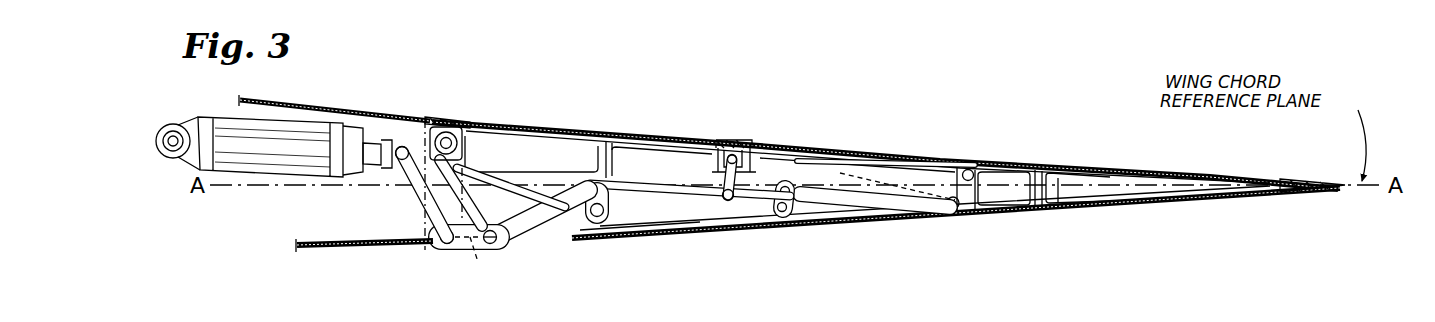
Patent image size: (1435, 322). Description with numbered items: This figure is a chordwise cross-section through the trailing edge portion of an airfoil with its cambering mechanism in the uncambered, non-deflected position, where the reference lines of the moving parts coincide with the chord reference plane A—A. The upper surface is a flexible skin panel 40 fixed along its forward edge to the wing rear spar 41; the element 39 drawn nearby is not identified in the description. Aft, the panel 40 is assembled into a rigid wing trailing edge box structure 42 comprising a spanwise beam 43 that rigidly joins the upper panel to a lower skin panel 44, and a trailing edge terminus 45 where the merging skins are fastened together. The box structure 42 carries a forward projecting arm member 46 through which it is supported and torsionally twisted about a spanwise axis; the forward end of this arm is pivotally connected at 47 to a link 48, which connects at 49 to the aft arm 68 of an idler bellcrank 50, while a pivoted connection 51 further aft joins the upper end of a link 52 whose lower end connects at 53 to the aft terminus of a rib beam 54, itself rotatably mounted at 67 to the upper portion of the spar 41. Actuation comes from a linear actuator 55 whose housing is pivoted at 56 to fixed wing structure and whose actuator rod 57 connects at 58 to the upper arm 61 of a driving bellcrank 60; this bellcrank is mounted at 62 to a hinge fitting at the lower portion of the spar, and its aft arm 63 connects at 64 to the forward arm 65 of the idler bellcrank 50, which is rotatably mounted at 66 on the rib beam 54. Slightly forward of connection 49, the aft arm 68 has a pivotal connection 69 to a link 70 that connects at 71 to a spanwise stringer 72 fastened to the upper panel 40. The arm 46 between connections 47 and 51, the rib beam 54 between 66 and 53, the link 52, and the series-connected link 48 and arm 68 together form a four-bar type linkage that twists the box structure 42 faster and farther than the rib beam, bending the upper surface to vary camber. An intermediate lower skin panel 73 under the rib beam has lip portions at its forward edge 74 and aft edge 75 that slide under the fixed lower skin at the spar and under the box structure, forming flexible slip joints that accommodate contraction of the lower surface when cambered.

The upper flap skin panel 39 is at (319, 102).
The flexible skin panel 40 is at (617, 121).
The wing rear spar 41 is at (419, 135).
The wing trailing edge box structure 42 is at (1124, 196).
The spanwise beam 43 is at (1097, 185).
The lower skin panel 44 is at (1097, 209).
The trailing edge terminus 45 is at (1341, 181).
The forward projecting arm member 46 is at (853, 188).
The pivoted connection 47 is at (800, 160).
The link 48 is at (778, 190).
The pivotal connection 49 is at (782, 213).
The idler bellcrank 50 is at (557, 182).
The pivoted connection 51 is at (971, 171).
The link 52 is at (960, 196).
The lower end connection 53 is at (966, 208).
The rib beam 54 is at (527, 119).
The linear actuator 55 is at (337, 118).
The pivotal attachment 56 is at (176, 124).
The actuator rod 57 is at (378, 176).
The pivotal connection 58 is at (386, 168).
The driving bellcrank 60 is at (420, 215).
The upper arm 61 is at (423, 185).
The rotatable mounting 62 is at (441, 243).
The aft arm 63 is at (460, 250).
The pivotal connection 64 is at (497, 244).
The forward arm 65 is at (553, 238).
The rotatable mounting 66 is at (601, 217).
The structural pivotal connection 67 is at (448, 134).
The aft arm 68 is at (643, 179).
The pivotal connection 69 is at (722, 196).
The link 70 is at (722, 181).
The connection 71 is at (734, 155).
The spanwise stringer 72 is at (717, 146).
The intermediate lower skin panel 73 is at (700, 230).
The forward edge lip portion 74 is at (479, 264).
The aft edge lip portion 75 is at (953, 210).